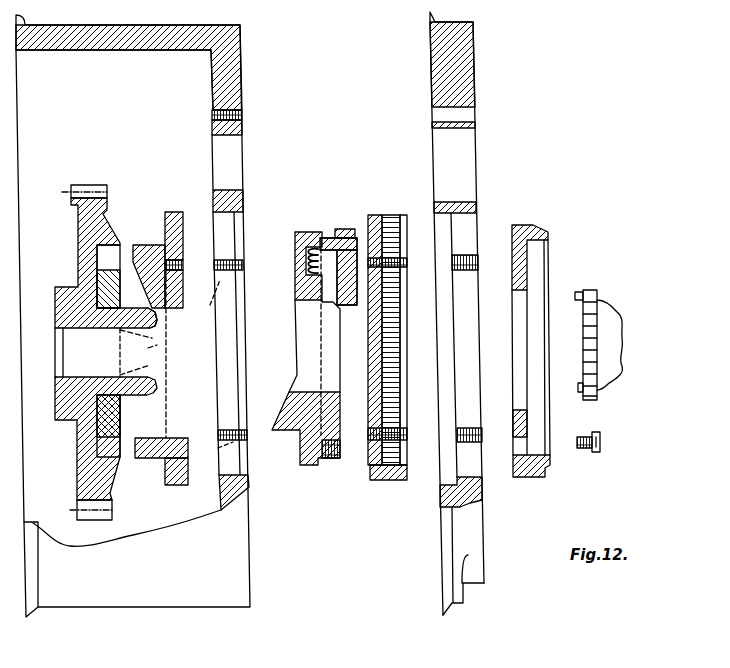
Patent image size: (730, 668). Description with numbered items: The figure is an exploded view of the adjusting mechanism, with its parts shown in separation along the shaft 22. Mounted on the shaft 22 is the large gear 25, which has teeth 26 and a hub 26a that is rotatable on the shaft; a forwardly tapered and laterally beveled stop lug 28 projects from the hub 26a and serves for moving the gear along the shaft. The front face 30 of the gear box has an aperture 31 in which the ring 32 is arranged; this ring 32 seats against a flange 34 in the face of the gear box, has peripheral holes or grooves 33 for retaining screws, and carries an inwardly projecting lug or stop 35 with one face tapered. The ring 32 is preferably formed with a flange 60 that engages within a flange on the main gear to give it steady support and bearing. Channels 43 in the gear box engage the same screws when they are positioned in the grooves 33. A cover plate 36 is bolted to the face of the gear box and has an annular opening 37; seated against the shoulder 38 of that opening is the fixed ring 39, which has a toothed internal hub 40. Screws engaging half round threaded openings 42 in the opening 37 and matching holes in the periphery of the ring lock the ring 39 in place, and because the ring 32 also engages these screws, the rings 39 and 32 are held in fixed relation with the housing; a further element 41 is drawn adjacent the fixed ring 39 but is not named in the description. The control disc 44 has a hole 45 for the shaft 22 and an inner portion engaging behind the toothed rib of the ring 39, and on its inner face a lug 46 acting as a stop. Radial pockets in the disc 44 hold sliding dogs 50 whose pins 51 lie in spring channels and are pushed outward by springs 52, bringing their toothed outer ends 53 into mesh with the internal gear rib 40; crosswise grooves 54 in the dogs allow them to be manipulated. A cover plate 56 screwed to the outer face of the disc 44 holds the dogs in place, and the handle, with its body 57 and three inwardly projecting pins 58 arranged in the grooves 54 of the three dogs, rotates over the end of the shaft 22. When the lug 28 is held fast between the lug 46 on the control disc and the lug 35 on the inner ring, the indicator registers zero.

The shaft 22 is at (80, 365).
The large gear 25 is at (78, 258).
The teeth 26 is at (107, 192).
The hub 26a is at (77, 420).
The stop lug 28 is at (148, 348).
The front face 30 is at (245, 80).
The aperture 31 is at (216, 490).
The ring 32 is at (178, 210).
The peripheral holes or grooves 33 is at (180, 266).
The flange 34 is at (236, 214).
The lug or stop 35 is at (163, 318).
The cover plate 36 is at (478, 205).
The annular opening 37 is at (462, 348).
The shoulder 38 is at (455, 470).
The fixed ring 39 is at (401, 480).
The toothed internal hub 40 is at (393, 378).
The bearing 41 is at (372, 440).
The half round threaded openings 42 is at (478, 262).
The channels 43 is at (211, 375).
The control disc 44 is at (340, 455).
The hole 45 is at (297, 343).
The lug 46 is at (287, 400).
The sliding dogs 50 is at (357, 242).
The pins 51 is at (325, 238).
The springs 52 is at (313, 249).
The toothed outer ends 53 is at (340, 229).
The crosswise grooves 54 is at (355, 300).
The cover plate 56 is at (545, 226).
The handle body 57 is at (603, 343).
The inwardly projecting pins 58 is at (581, 392).
The flange 60 is at (165, 232).